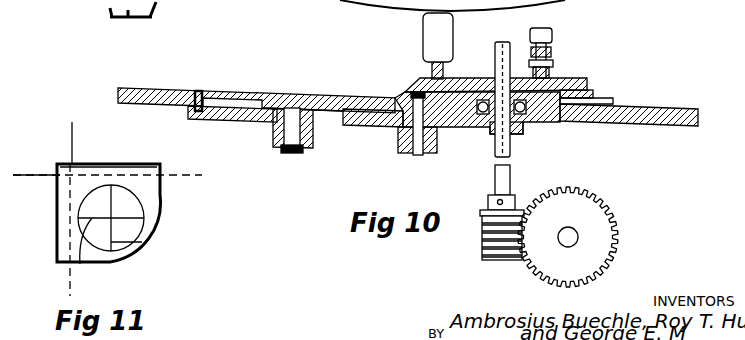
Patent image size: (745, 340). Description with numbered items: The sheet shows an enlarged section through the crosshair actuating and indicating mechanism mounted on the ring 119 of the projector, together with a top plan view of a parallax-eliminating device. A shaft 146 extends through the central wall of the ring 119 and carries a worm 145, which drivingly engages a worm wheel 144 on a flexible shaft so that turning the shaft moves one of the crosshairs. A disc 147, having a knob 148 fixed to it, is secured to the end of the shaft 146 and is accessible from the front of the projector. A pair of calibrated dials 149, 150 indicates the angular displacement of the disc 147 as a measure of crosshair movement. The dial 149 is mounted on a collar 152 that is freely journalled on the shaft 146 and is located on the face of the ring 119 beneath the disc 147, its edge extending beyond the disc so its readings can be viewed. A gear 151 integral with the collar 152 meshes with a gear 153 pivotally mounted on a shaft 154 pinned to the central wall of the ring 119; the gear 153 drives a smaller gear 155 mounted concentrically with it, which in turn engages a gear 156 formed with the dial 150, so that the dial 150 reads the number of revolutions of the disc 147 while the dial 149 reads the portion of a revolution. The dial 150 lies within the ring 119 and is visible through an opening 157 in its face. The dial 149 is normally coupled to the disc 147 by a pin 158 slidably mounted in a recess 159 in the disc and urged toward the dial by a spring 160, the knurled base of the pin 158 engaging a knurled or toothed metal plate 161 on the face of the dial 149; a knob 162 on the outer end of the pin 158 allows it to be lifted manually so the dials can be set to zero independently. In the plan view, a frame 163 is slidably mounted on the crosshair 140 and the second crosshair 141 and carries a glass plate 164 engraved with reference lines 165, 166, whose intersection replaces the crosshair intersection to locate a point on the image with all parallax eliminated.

In FIG. 10, the ring 119 is at (660, 118).
In FIG. 11, the crosshair 140 is at (72, 143).
In FIG. 11, the second crosshair 141 is at (27, 176).
In FIG. 10, the worm wheel 144 is at (592, 212).
In FIG. 10, the worm 145 is at (497, 243).
In FIG. 10, the shaft 146 is at (510, 175).
In FIG. 10, the disc 147 is at (592, 92).
In FIG. 10, the knob 148 is at (442, 37).
In FIG. 10, the dial 149 is at (603, 98).
In FIG. 10, the dial 150 is at (208, 107).
In FIG. 10, the gear 151 is at (523, 131).
In FIG. 10, the collar 152 is at (497, 143).
In FIG. 10, the gear 153 is at (447, 140).
In FIG. 10, the shaft 154 is at (418, 150).
In FIG. 10, the smaller gear 155 is at (392, 138).
In FIG. 10, the gear 156 is at (198, 92).
In FIG. 10, the opening 157 is at (233, 95).
In FIG. 10, the pin 158 is at (552, 62).
In FIG. 10, the recess 159 is at (516, 46).
In FIG. 10, the spring 160 is at (551, 50).
In FIG. 10, the metal plate 161 is at (554, 74).
In FIG. 10, the knob 162 is at (551, 32).
In FIG. 11, the frame 163 is at (152, 198).
In FIG. 11, the glass plate 164 is at (127, 232).
In FIG. 11, the reference line 165 is at (78, 260).
In FIG. 11, the reference line 166 is at (123, 246).